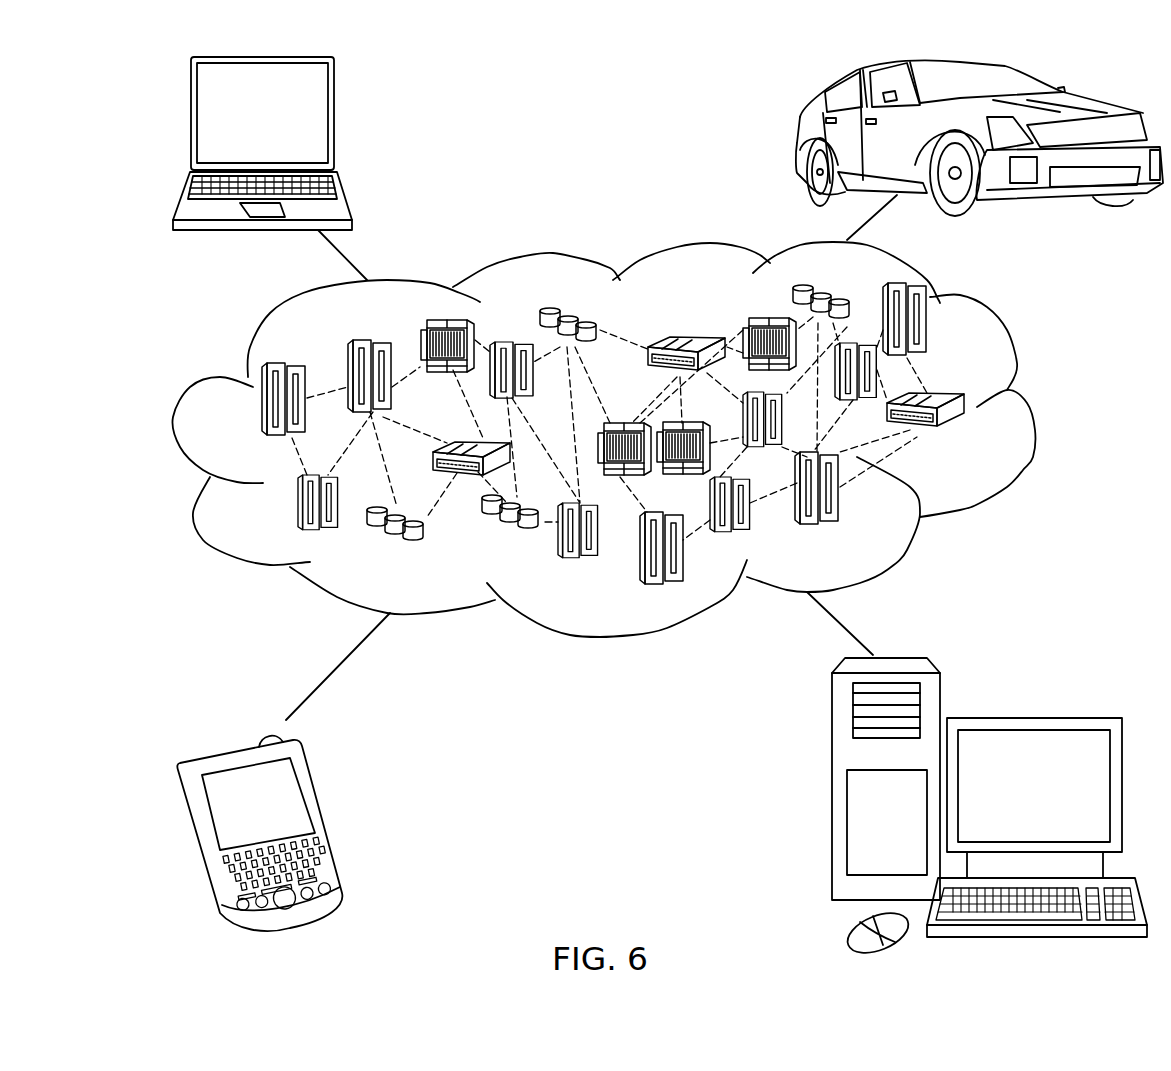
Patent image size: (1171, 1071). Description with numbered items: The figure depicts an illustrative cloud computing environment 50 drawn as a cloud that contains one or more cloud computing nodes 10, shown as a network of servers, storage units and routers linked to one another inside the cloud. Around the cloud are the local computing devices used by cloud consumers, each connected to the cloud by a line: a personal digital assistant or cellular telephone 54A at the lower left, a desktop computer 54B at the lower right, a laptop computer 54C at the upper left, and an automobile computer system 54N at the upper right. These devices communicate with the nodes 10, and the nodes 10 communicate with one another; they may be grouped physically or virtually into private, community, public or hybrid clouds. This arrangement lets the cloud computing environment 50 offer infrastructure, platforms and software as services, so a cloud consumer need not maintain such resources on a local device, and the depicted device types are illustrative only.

The cloud computing nodes 10 is at (976, 446).
The cloud computing environment 50 is at (1035, 412).
The personal digital assistant or cellular telephone 54A is at (325, 817).
The desktop computer 54B is at (1032, 718).
The laptop computer 54C is at (334, 122).
The automobile computer system 54N is at (800, 137).